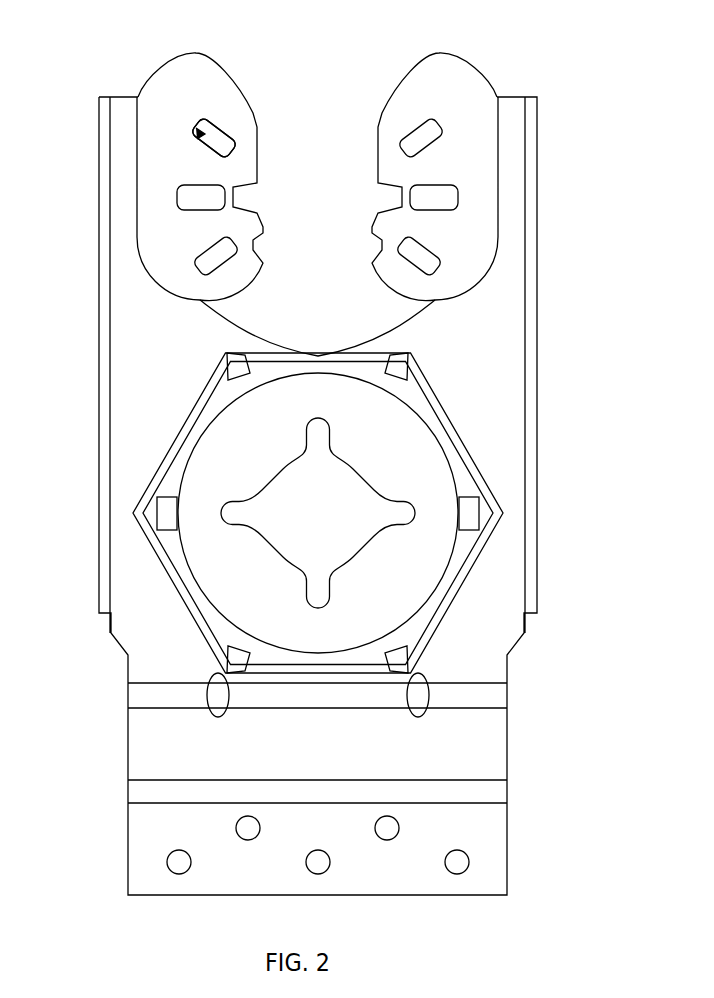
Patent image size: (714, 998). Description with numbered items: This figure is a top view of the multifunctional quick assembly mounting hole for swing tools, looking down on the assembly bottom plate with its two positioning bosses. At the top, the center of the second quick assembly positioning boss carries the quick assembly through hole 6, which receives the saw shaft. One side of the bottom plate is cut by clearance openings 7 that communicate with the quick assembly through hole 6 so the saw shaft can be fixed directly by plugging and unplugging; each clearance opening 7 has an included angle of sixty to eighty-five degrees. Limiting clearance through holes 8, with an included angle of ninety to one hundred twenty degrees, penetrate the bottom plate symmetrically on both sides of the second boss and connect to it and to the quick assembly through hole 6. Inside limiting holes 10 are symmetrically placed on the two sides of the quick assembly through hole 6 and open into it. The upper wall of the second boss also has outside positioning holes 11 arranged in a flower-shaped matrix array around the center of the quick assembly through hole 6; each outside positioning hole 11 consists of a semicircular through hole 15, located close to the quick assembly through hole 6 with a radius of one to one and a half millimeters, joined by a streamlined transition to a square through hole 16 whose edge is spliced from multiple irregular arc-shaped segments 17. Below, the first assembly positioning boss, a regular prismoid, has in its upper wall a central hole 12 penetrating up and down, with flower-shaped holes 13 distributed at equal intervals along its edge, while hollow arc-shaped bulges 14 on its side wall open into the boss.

The quick assembly through hole 6 is at (320, 183).
The clearance opening 7 is at (310, 57).
The limiting clearance through hole 8 is at (293, 322).
The inside limiting hole 10 is at (380, 253).
The outside positioning hole 11 is at (437, 125).
The central hole 12 is at (285, 537).
The flower-shaped hole 13 is at (318, 600).
The arc-shaped bulge 14 is at (457, 435).
The semicircular through hole 15 is at (230, 148).
The square through hole 16 is at (203, 133).
The irregular arc-shaped segment 17 is at (219, 122).